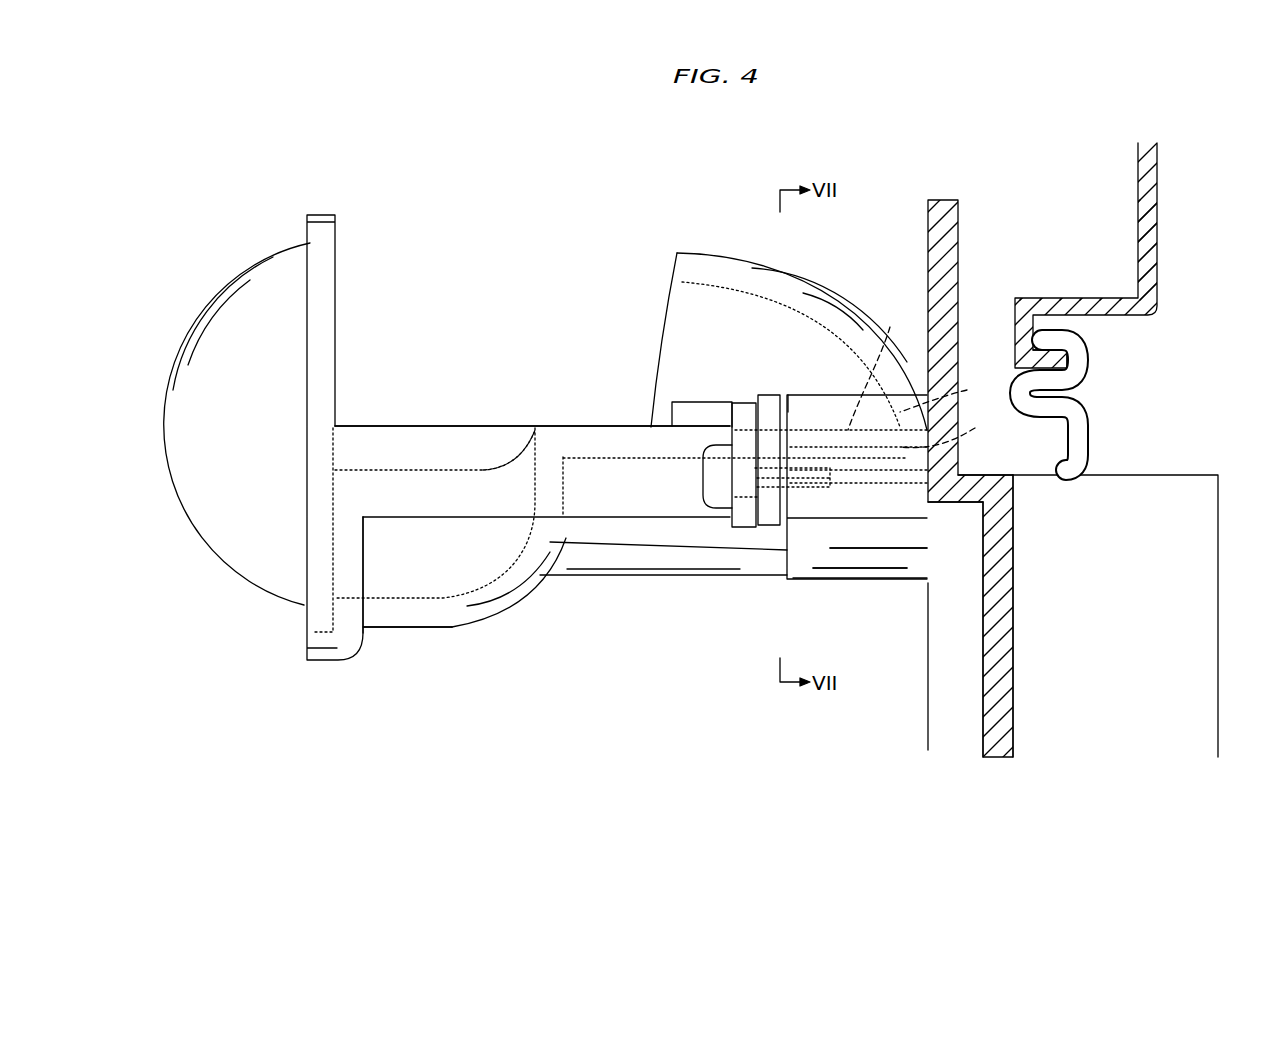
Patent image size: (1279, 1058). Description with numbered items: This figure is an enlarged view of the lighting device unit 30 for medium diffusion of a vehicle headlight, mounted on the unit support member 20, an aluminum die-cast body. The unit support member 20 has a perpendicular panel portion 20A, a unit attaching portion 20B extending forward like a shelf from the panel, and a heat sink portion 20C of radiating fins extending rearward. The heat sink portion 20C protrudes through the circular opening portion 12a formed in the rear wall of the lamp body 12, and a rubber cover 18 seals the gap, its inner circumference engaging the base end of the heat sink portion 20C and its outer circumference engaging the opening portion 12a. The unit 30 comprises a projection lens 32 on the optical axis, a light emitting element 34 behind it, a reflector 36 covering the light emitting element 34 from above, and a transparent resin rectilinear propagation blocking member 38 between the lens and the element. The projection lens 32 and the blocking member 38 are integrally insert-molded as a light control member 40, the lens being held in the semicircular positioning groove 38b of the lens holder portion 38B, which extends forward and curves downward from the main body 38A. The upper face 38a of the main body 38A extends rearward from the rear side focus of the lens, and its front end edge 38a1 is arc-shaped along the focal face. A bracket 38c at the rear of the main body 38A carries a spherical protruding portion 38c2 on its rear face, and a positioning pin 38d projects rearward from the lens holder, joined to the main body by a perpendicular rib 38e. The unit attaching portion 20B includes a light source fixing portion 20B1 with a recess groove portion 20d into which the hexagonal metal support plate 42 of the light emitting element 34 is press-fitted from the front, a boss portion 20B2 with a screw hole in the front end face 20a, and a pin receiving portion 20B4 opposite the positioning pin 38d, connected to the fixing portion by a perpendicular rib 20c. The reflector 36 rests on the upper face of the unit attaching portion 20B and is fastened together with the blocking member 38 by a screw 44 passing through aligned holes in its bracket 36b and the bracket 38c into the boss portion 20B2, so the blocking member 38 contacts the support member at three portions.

The lamp body 12 is at (1165, 266).
The opening portion 12a is at (1062, 355).
The rubber cover 18 is at (1082, 428).
The unit support member 20 is at (968, 280).
The front end face 20a is at (780, 508).
The perpendicular rib 20c is at (817, 533).
The recess groove portion 20d is at (947, 391).
The perpendicular panel portion 20A is at (1020, 650).
The unit attaching portion 20B is at (905, 392).
The light source fixing portion 20B1 is at (877, 450).
The boss portion 20B2 is at (860, 507).
The pin receiving portion 20B4 is at (840, 563).
The heat sink portion 20C is at (1133, 473).
The lighting device unit for medium diffusion 30 is at (447, 246).
The projection lens 32 is at (248, 256).
The light emitting element 34 is at (892, 327).
The reflector 36 is at (806, 270).
The bracket 36b is at (745, 410).
The rectilinear propagation blocking member 38 is at (545, 706).
The main body 38A is at (612, 448).
The lens holder portion 38B is at (447, 580).
The upper face 38a is at (570, 425).
The front end edge 38a1 is at (517, 455).
The positioning groove 38b is at (325, 632).
The bracket 38c is at (770, 400).
The spherical protruding portion 38c2 is at (790, 412).
The positioning pin 38d is at (752, 567).
The perpendicular rib 38e is at (700, 535).
The light control member 40 is at (298, 662).
The support plate 42 is at (945, 428).
The screw 44 is at (707, 478).